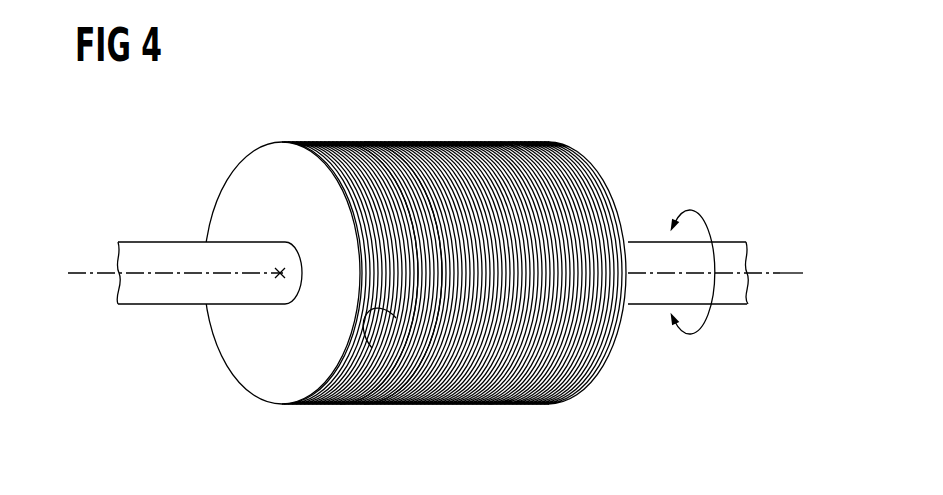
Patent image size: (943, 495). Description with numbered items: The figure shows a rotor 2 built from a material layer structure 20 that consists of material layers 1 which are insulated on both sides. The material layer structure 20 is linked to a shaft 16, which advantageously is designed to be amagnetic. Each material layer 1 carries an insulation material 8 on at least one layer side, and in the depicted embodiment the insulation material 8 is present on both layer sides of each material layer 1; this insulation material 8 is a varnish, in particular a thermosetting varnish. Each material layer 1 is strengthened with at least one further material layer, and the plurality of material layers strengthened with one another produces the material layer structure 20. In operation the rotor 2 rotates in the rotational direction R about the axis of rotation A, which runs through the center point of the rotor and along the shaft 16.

The rotor 2 is at (478, 257).
The material layer structure 20 is at (548, 115).
The shaft 16 is at (153, 252).
The insulation material 8 is at (342, 406).
The material layer 1 is at (366, 406).
The rotational direction R is at (688, 210).
The axis of rotation A is at (787, 272).